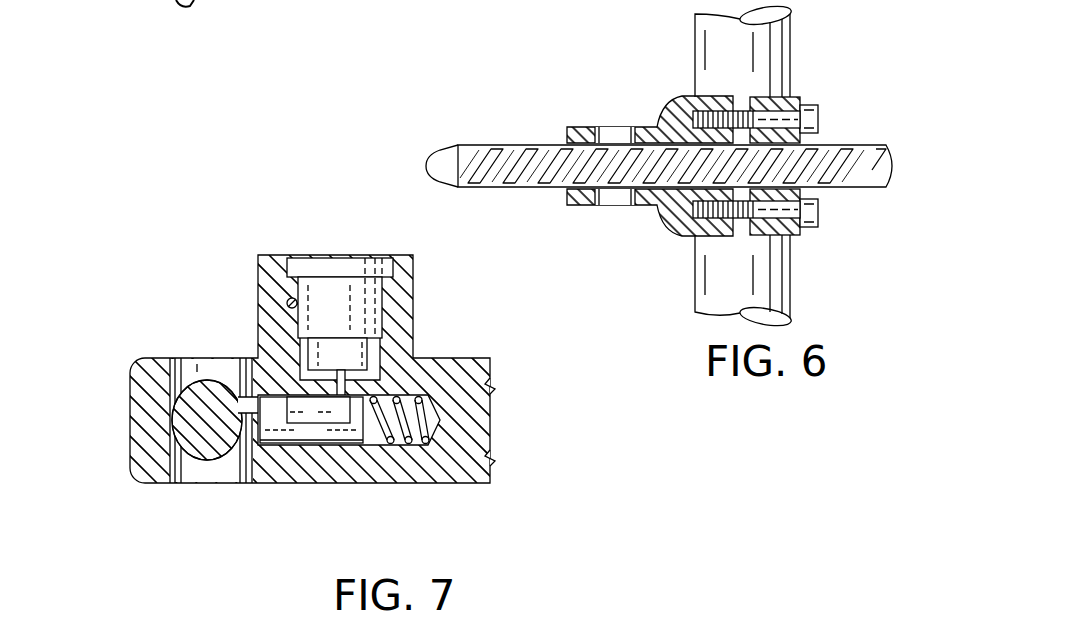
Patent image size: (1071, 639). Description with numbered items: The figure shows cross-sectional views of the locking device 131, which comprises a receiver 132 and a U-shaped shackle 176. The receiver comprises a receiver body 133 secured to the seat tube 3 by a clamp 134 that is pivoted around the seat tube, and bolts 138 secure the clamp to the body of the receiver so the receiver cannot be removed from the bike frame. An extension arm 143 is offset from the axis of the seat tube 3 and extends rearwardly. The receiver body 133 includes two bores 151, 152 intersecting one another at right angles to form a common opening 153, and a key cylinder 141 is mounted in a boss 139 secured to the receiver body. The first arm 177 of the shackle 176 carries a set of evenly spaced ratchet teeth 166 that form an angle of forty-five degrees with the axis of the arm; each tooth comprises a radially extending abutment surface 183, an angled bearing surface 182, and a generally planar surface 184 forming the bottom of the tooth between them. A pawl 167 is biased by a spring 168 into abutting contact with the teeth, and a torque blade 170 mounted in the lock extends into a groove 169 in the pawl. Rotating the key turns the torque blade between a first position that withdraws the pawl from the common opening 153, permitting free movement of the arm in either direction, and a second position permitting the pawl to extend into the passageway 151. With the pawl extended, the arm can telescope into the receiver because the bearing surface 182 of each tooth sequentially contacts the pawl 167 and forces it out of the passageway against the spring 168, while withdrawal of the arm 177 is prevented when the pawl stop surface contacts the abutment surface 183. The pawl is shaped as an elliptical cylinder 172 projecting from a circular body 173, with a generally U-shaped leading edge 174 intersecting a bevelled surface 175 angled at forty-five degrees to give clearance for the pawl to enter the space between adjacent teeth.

In FIG. 6, the seat tube 3 is at (776, 44).
In FIG. 6, the device 131 is at (812, 246).
In FIG. 7, the device 131 is at (124, 348).
In FIG. 6, the receiver 132 is at (673, 232).
In FIG. 7, the receiver 132 is at (124, 378).
In FIG. 6, the receiver body 133 is at (688, 236).
In FIG. 7, the receiver body 133 is at (362, 478).
In FIG. 6, the clamp 134 is at (798, 98).
In FIG. 6, the bolts 138 is at (818, 113).
In FIG. 7, the boss 139 is at (415, 301).
In FIG. 7, the key cylinder 141 is at (327, 262).
In FIG. 7, the extension arm 143 is at (497, 436).
In FIG. 6, the bore 151 is at (678, 208).
In FIG. 7, the bore 151 is at (176, 400).
In FIG. 6, the bore 152 is at (631, 133).
In FIG. 7, the bore 152 is at (182, 376).
In FIG. 7, the common opening 153 is at (227, 475).
In FIG. 6, the ratchet teeth 166 is at (673, 165).
In FIG. 7, the ratchet teeth 166 is at (228, 376).
In FIG. 6, the pawl 167 is at (608, 172).
In FIG. 7, the pawl 167 is at (281, 445).
In FIG. 7, the spring 168 is at (440, 361).
In FIG. 7, the groove 169 is at (300, 420).
In FIG. 7, the torque blade 170 is at (405, 362).
In FIG. 7, the elliptical cylinder 172 is at (265, 258).
In FIG. 7, the circular body 173 is at (392, 456).
In FIG. 7, the leading edge 174 is at (188, 443).
In FIG. 7, the bevelled surface 175 is at (240, 378).
In FIG. 6, the shackle 176 is at (642, 159).
In FIG. 7, the shackle 176 is at (198, 466).
In FIG. 6, the first arm 177 is at (488, 188).
In FIG. 7, the first arm 177 is at (190, 432).
In FIG. 6, the bearing surface 182 is at (858, 188).
In FIG. 7, the bearing surface 182 is at (260, 447).
In FIG. 6, the abutment surface 183 is at (540, 185).
In FIG. 6, the planar surface 184 is at (858, 147).
In FIG. 7, the planar surface 184 is at (243, 440).